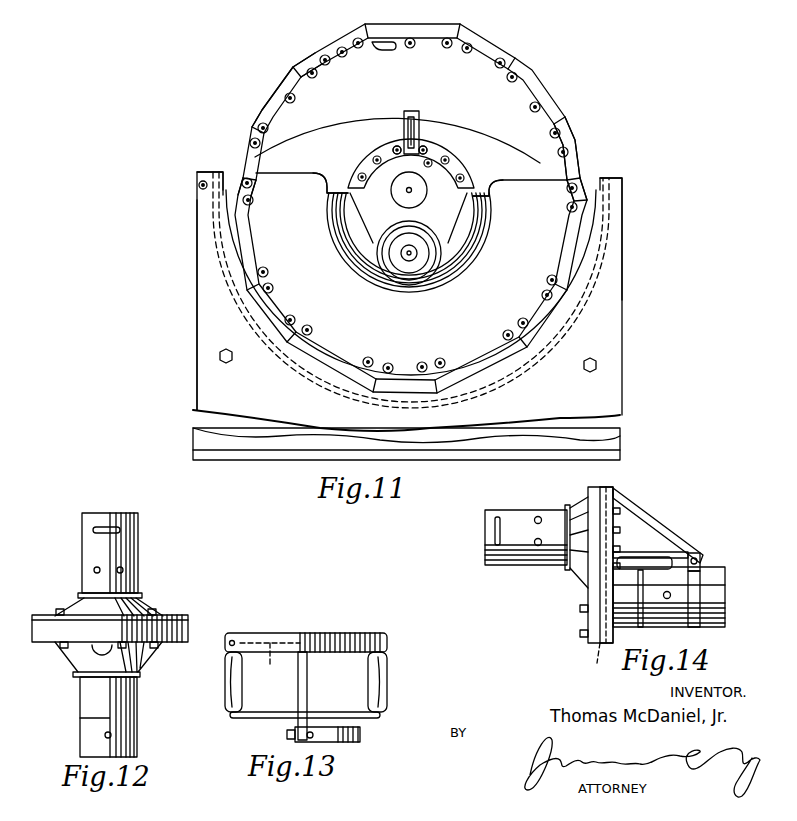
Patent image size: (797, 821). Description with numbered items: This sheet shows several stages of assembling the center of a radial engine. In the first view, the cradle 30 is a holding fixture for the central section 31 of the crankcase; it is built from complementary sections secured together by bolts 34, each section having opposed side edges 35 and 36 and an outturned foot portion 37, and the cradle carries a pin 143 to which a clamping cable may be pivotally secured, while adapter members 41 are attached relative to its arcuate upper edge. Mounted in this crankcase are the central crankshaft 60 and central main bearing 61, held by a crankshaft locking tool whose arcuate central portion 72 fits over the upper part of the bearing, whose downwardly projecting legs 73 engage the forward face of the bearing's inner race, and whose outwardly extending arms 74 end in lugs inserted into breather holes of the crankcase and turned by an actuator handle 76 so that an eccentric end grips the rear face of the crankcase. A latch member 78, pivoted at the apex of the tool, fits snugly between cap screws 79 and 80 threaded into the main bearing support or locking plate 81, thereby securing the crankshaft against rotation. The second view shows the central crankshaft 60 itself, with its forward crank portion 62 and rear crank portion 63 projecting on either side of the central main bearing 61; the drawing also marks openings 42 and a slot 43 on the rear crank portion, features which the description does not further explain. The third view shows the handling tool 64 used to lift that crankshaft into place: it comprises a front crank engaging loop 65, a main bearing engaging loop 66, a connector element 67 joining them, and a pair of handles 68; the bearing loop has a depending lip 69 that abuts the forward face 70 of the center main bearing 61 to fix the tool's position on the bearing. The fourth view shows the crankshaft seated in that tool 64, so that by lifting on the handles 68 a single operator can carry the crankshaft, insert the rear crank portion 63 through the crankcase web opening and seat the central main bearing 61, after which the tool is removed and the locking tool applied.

In FIG. 11, the cradle 30 is at (612, 298).
In FIG. 11, the central section of the crankcase 31 is at (565, 128).
In FIG. 11, the bolts 34 is at (219, 356).
In FIG. 11, the side edge 35 is at (612, 230).
In FIG. 11, the side edge 36 is at (197, 290).
In FIG. 11, the outturned foot portion 37 is at (212, 455).
In FIG. 11, the pin 143 is at (199, 186).
In FIG. 11, the arcuate central portion 72 is at (360, 148).
In FIG. 11, the downwardly projecting legs 73 is at (327, 192).
In FIG. 11, the outwardly extending arms 74 is at (290, 156).
In FIG. 11, the actuator handle 76 is at (258, 178).
In FIG. 11, the latch member 78 is at (417, 140).
In FIG. 11, the cap screw 79 is at (396, 146).
In FIG. 11, the cap screw 80 is at (425, 146).
In FIG. 11, the main bearing support or locking plate 81 is at (453, 163).
In FIG. 12, the adapter members 41 is at (112, 735).
In FIG. 12, the holes in upper tube 42 is at (118, 567).
In FIG. 12, the slot 43 is at (126, 518).
In FIG. 12, the central crankshaft 60 is at (130, 601).
In FIG. 12, the central main bearing 61 is at (180, 618).
In FIG. 14, the central main bearing 61 is at (588, 626).
In FIG. 12, the forward crank portion 62 is at (124, 700).
In FIG. 14, the forward crank portion 62 is at (716, 583).
In FIG. 12, the rear crank portion 63 is at (138, 556).
In FIG. 14, the rear crank portion 63 is at (538, 568).
In FIG. 13, the tool 64 is at (358, 670).
In FIG. 14, the tool 64 is at (650, 555).
In FIG. 13, the front crank engaging loop 65 is at (362, 735).
In FIG. 14, the front crank engaging loop 65 is at (702, 628).
In FIG. 13, the main bearing engaging loop 66 is at (350, 640).
In FIG. 14, the main bearing engaging loop 66 is at (606, 500).
In FIG. 13, the connector element 67 is at (307, 695).
In FIG. 14, the connector element 67 is at (660, 530).
In FIG. 13, the handles 68 is at (388, 690).
In FIG. 14, the handles 68 is at (650, 565).
In FIG. 13, the depending lip 69 is at (268, 667).
In FIG. 14, the depending lip 69 is at (597, 662).
In FIG. 12, the forward face 70 is at (170, 644).